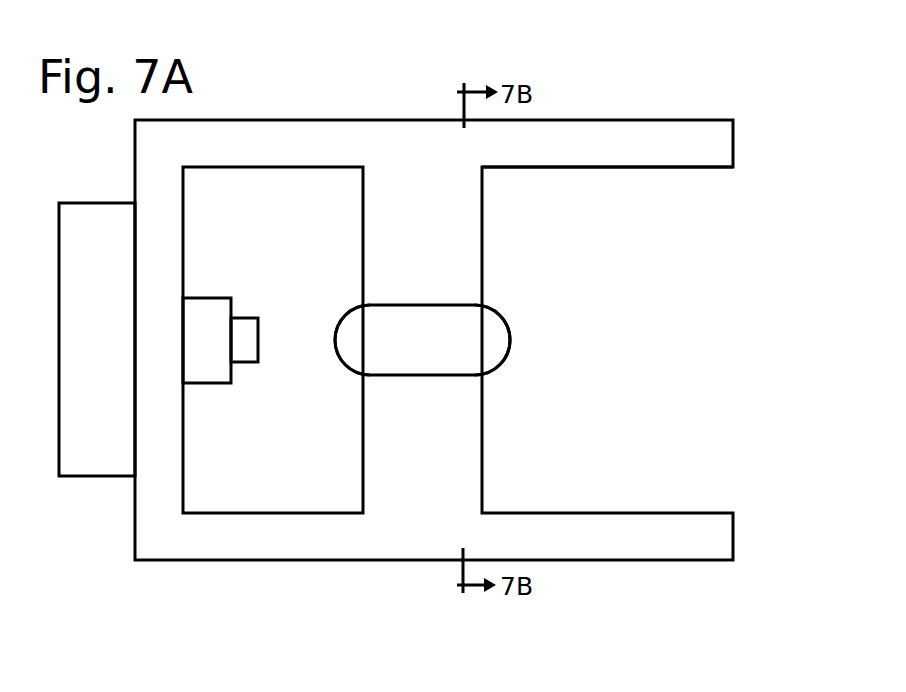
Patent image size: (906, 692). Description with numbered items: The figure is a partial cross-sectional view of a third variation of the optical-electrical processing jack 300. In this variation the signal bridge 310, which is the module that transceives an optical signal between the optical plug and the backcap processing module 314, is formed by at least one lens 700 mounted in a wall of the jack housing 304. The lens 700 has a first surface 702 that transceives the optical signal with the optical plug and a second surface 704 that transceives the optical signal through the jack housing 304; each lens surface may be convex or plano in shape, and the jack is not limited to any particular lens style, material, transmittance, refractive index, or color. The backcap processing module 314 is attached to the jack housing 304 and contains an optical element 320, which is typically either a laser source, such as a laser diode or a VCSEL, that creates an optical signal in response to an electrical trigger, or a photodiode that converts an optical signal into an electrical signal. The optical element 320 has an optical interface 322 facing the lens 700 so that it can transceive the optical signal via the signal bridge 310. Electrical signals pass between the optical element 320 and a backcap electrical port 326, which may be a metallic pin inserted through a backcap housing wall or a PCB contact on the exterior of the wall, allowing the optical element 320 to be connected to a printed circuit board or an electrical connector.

The camera module assembly 300 is at (722, 86).
The jack housing 304 is at (647, 168).
The signal bridge 310 is at (314, 340).
The backcap processing module 314 is at (287, 119).
The optical element 320 is at (213, 297).
The optical interface 322 is at (243, 363).
The backcap electrical port 326 is at (97, 339).
The lens 700 is at (422, 340).
The first surface 702 is at (508, 325).
The second surface 704 is at (340, 325).